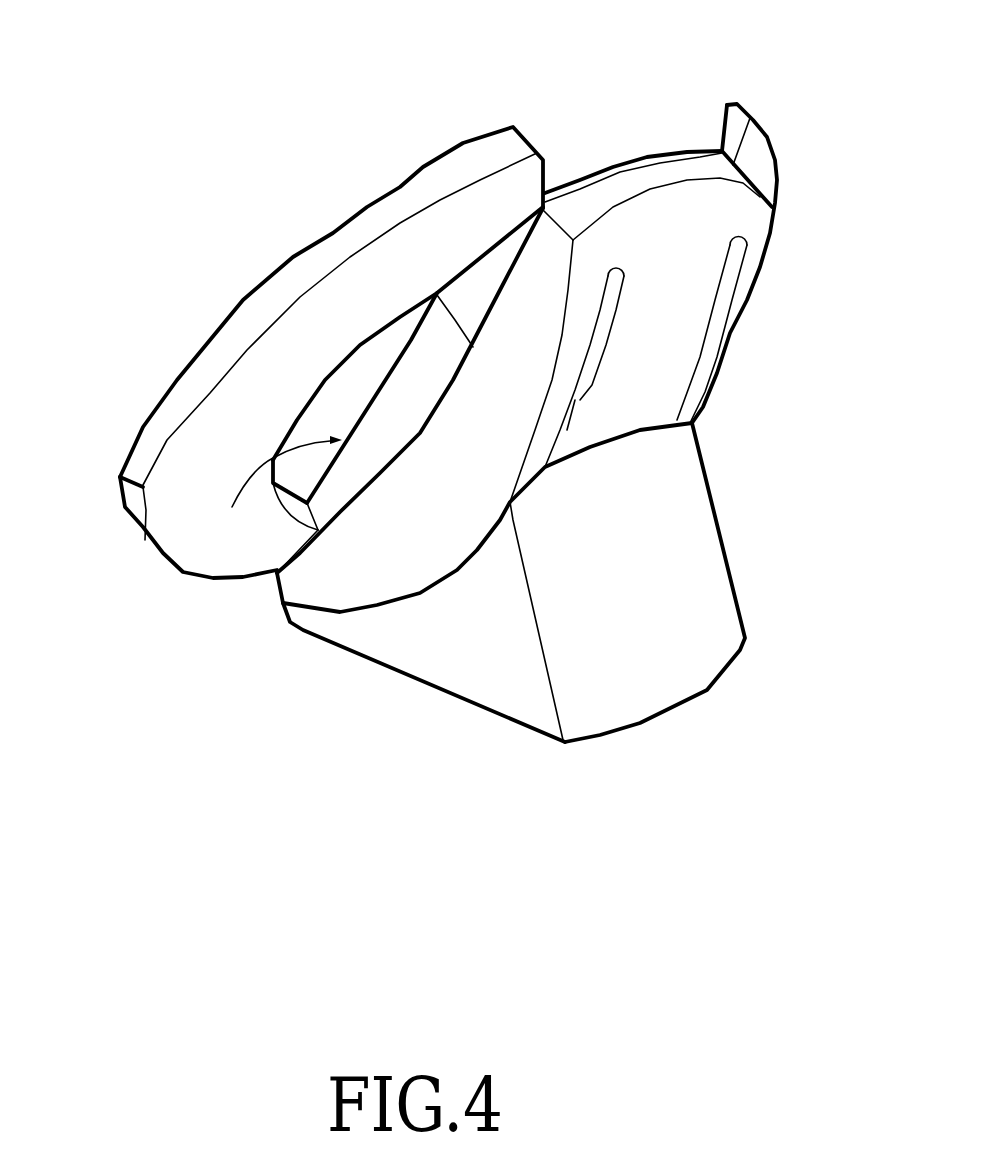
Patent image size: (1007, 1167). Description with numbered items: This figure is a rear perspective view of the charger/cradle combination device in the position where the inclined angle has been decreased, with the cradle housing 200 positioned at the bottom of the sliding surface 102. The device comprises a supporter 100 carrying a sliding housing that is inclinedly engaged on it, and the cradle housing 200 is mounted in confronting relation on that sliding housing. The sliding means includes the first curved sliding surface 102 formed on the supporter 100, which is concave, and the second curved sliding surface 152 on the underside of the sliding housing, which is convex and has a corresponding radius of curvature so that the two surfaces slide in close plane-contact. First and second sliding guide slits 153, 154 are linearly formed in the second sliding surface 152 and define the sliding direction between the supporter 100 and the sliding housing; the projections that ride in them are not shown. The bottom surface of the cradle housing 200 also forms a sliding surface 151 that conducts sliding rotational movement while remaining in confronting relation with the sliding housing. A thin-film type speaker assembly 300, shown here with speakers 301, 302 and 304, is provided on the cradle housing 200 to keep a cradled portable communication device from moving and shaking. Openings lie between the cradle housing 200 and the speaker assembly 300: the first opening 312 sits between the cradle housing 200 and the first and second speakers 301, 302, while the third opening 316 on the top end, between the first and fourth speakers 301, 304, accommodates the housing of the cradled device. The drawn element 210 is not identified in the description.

The supporter 100 is at (579, 399).
The first curved sliding surface 102 is at (511, 605).
The sliding surface 151 is at (487, 596).
The second curved sliding surface 152 is at (676, 303).
The first sliding guide slit 153 is at (702, 431).
The second sliding guide slit 154 is at (696, 352).
The cradle housing 200 is at (311, 348).
The rotating ring 210 is at (408, 286).
The speaker assembly 300 is at (275, 348).
The first speaker 301 is at (331, 298).
The second speaker 302 is at (76, 508).
The fourth speaker 304 is at (802, 156).
The first opening 312 is at (340, 319).
The third opening 316 is at (633, 106).